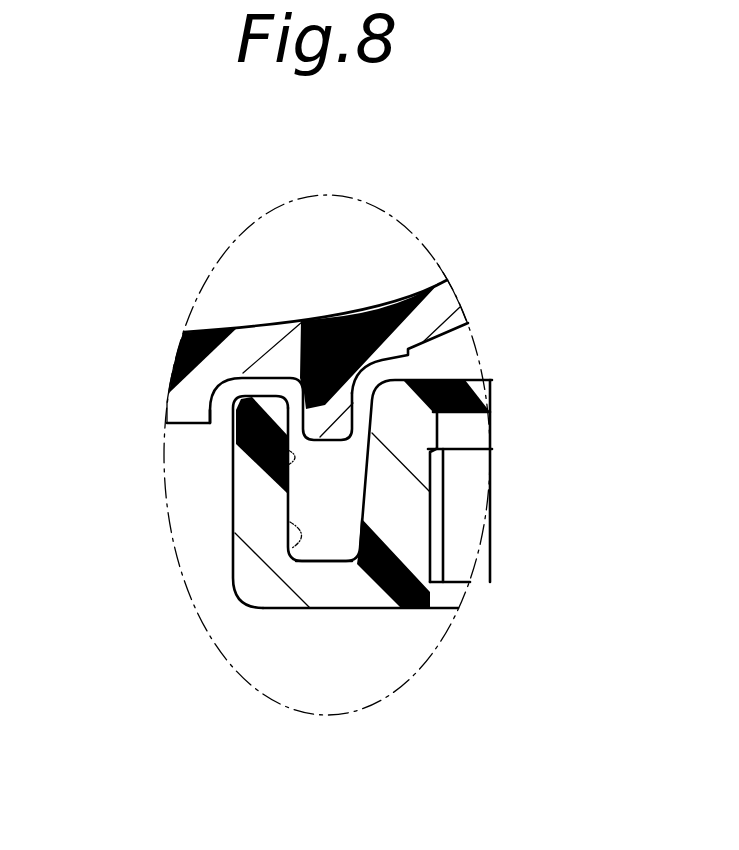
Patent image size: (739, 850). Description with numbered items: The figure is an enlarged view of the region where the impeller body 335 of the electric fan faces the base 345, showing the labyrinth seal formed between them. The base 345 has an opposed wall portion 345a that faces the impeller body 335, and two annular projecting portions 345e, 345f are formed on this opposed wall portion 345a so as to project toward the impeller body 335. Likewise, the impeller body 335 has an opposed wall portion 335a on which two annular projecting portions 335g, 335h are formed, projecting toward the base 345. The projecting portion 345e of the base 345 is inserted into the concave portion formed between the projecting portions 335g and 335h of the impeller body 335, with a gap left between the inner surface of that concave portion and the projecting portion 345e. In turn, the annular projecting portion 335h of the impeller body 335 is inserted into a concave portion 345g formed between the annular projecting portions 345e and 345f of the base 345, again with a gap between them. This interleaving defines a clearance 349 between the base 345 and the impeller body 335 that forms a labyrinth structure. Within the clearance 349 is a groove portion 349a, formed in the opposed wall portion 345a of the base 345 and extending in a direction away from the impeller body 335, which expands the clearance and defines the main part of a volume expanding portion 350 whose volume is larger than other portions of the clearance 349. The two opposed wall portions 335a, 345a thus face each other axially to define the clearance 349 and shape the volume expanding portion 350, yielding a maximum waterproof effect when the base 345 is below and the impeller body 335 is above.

The impeller body 335 is at (313, 294).
The opposed wall portion 335a is at (320, 337).
The annular projecting portion 335g is at (195, 394).
The annular projecting portion 335h is at (327, 410).
The base 345 is at (324, 582).
The opposed wall portion 345a is at (357, 567).
The annular projecting portion 345e is at (247, 503).
The annular projecting portion 345f is at (402, 510).
The concave portion 345g is at (270, 470).
The clearance 349 is at (277, 541).
The groove portion 349a is at (332, 525).
The volume expanding portion 350 is at (328, 467).